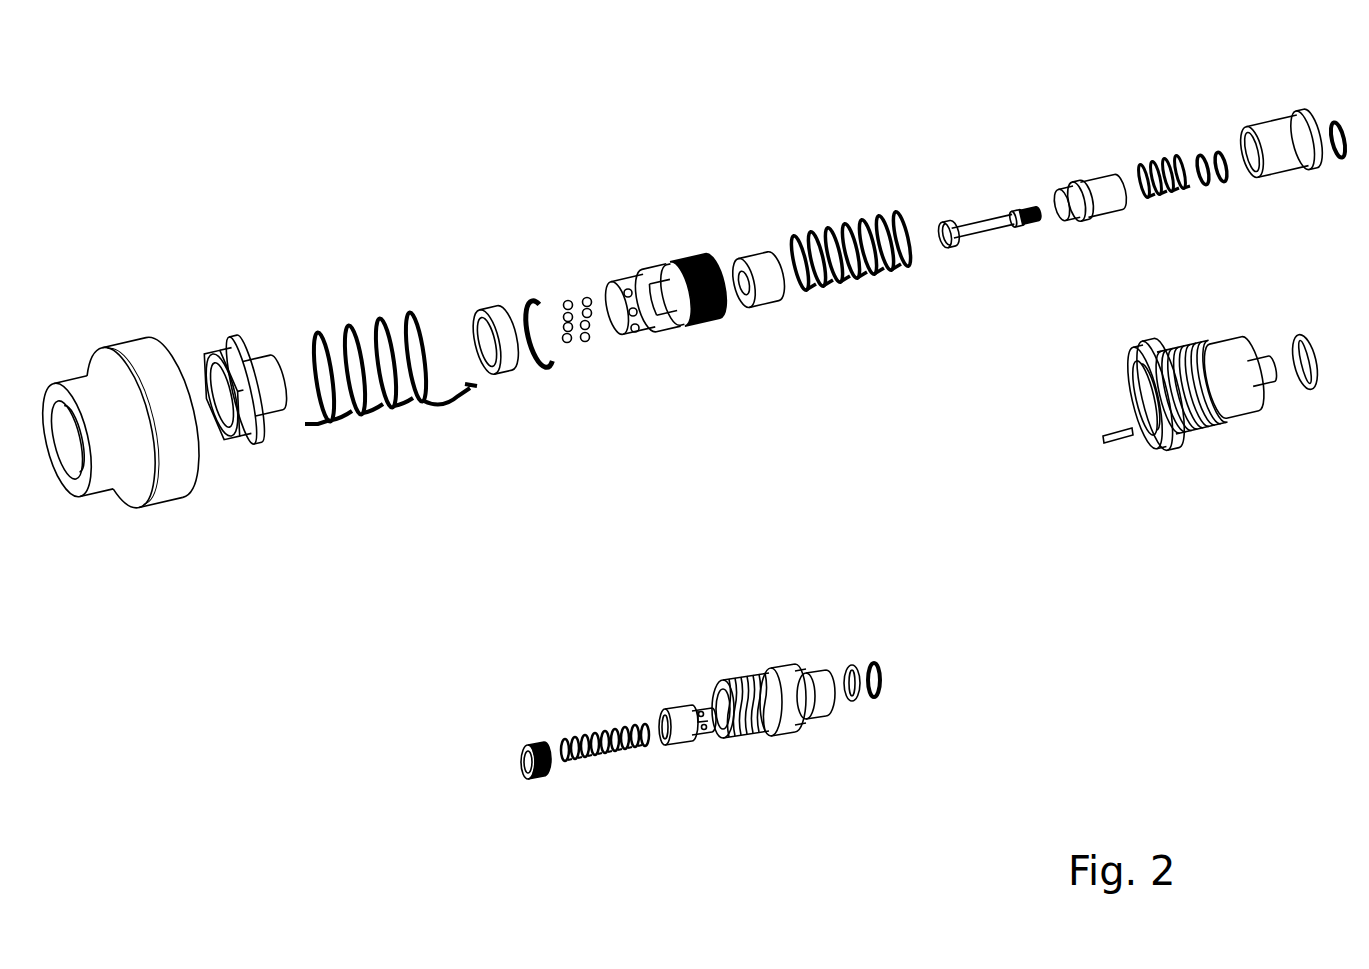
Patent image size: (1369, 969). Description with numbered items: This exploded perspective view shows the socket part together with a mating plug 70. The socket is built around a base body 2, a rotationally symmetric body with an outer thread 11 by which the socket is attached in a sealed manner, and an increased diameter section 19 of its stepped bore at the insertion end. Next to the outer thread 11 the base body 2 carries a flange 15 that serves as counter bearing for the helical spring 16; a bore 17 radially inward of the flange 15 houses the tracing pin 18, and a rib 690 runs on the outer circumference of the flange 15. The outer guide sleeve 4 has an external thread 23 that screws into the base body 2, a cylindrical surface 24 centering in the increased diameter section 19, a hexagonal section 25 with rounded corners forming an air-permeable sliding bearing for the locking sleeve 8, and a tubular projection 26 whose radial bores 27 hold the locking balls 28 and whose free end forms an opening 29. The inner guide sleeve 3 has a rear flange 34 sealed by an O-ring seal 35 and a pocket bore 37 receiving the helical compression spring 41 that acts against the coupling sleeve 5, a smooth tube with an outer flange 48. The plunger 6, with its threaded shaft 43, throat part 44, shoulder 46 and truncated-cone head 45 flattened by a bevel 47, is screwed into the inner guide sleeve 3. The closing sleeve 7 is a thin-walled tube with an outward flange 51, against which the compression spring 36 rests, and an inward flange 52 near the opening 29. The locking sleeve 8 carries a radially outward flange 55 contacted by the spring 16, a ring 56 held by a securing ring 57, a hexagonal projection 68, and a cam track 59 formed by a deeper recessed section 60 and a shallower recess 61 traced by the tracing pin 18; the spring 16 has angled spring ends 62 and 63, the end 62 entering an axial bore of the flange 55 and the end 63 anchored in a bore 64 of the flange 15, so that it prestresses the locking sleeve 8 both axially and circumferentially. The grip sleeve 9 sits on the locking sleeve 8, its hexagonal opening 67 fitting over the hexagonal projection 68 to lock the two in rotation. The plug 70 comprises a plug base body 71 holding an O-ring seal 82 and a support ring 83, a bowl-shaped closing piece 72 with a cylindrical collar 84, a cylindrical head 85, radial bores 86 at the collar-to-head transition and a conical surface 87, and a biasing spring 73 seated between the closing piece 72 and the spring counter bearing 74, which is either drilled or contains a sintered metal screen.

The base body 2 is at (1191, 389).
The inner guide sleeve 3 is at (1244, 123).
The outer guide sleeve 4 is at (676, 276).
The coupling sleeve 5 is at (1090, 174).
The plunger 6 is at (984, 207).
The closing sleeve 7 is at (782, 266).
The locking sleeve 8 is at (263, 355).
The grip sleeve 9 is at (120, 419).
The outer thread 11 is at (1192, 350).
The flange 15 is at (1152, 342).
The helical spring 16 is at (391, 369).
The bore 17 is at (1150, 442).
The tracing pin 18 is at (1104, 440).
The increased diameter section 19 is at (1133, 398).
The external thread 23 is at (707, 320).
The cylindrical surface 24 is at (661, 276).
The hexagonal section 25 is at (666, 333).
The tubular projection 26 is at (613, 287).
The radial bores 27 is at (635, 333).
The locking balls 28 is at (569, 300).
The opening 29 is at (611, 322).
The flange 34 is at (1305, 128).
The O-ring seal 35 is at (1345, 162).
The compression spring 36 is at (818, 242).
The pocket bore 37 is at (1244, 152).
The helical compression spring 41 is at (1146, 168).
The threaded shaft 43 is at (1029, 224).
The throat part 44 is at (980, 234).
The head 45 is at (946, 226).
The shoulder 46 is at (1013, 210).
The bevel 47 is at (948, 250).
The flange 48 is at (1082, 218).
The radially outwardly extending flange 51 is at (777, 292).
The radially inwardly extending flange 52 is at (741, 306).
The flange 55 is at (263, 393).
The ring 56 is at (489, 302).
The securing ring 57 is at (532, 357).
The cam track 59 is at (293, 380).
The recessed section 60 is at (263, 362).
The recess 61 is at (293, 395).
The spring end 62 is at (323, 425).
The spring end 63 is at (468, 394).
The bore 64 is at (1161, 421).
The hexagonal opening 67 is at (70, 472).
The hexagonal projection 68 is at (222, 362).
The plug 70 is at (728, 714).
The plug base body 71 is at (806, 750).
The closing piece 72 is at (693, 722).
The biasing spring 73 is at (592, 720).
The spring counter bearing 74 is at (522, 790).
The O-ring seal 82 is at (856, 662).
The support ring 83 is at (885, 681).
The collar 84 is at (665, 720).
The head 85 is at (705, 716).
The radial bores 86 is at (706, 731).
The conical surface 87 is at (697, 712).
The rib 690 is at (1141, 350).